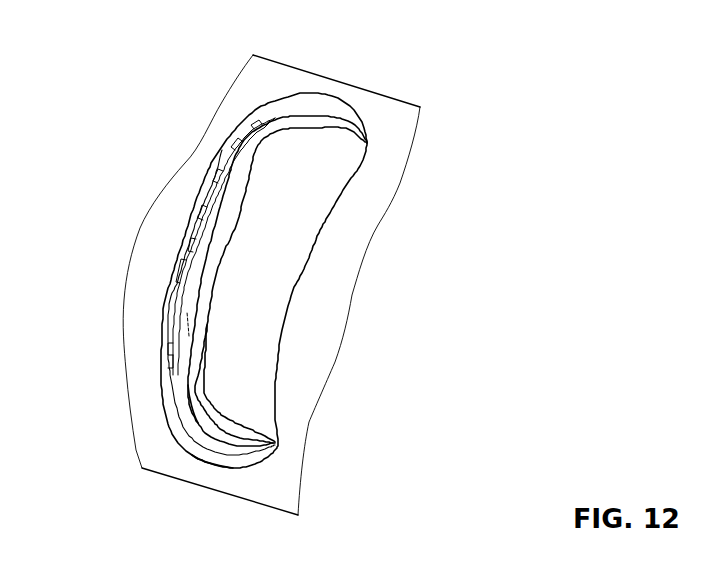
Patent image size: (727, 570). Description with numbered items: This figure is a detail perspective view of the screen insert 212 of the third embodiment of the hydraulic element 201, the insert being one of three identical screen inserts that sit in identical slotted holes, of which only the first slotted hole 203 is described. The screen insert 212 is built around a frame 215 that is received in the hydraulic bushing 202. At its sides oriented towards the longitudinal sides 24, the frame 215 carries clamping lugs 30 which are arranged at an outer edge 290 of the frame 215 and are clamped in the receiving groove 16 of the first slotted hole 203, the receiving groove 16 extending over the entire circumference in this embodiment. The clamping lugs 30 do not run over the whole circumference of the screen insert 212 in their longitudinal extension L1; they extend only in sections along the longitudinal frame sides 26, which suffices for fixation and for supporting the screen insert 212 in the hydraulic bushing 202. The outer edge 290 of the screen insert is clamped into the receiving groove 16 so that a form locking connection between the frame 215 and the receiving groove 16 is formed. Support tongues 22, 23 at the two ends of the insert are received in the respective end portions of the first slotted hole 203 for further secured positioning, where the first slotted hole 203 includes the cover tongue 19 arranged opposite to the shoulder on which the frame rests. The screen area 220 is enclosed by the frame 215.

The hydraulic element 201 is at (466, 157).
The hydraulic bushing 202 is at (400, 86).
The first slotted hole 203 is at (333, 90).
The screen insert 212 is at (283, 102).
The support tongue 22 is at (273, 118).
The frame 215 is at (215, 171).
The outer edge 290 is at (205, 211).
The clamping lugs 30 is at (190, 248).
The longitudinal sides 24 is at (167, 292).
The longitudinal extension L1 is at (173, 368).
The mirror glass 220 is at (265, 303).
The longitudinal frame sides 26 is at (192, 336).
The support tongue 23 is at (188, 412).
The cover tongue 19 is at (208, 458).
The receiving groove 16 is at (213, 190).